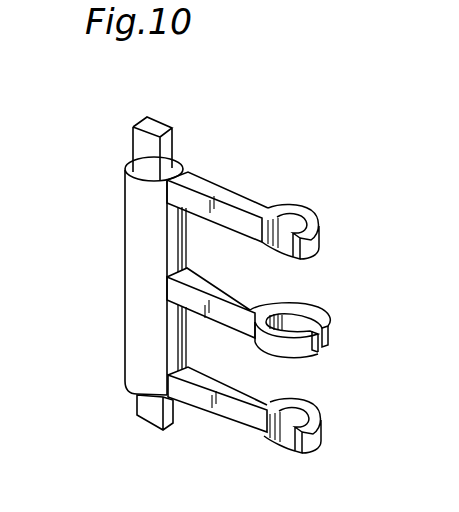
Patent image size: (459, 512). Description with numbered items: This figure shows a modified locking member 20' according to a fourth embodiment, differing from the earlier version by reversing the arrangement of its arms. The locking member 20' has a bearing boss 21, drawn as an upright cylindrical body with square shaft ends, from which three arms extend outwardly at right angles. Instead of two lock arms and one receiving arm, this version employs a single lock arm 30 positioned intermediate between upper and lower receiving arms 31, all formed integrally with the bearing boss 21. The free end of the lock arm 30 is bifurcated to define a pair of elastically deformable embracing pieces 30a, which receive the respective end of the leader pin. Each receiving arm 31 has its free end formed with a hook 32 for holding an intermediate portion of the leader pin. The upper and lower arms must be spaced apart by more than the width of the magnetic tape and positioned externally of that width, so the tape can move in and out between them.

The locking member 20' is at (57, 130).
The bearing boss 21 is at (127, 256).
The lock arm 30 is at (225, 293).
The embracing pieces 30a is at (305, 360).
The receiving arm 31 is at (213, 192).
The hook 32 is at (293, 218).